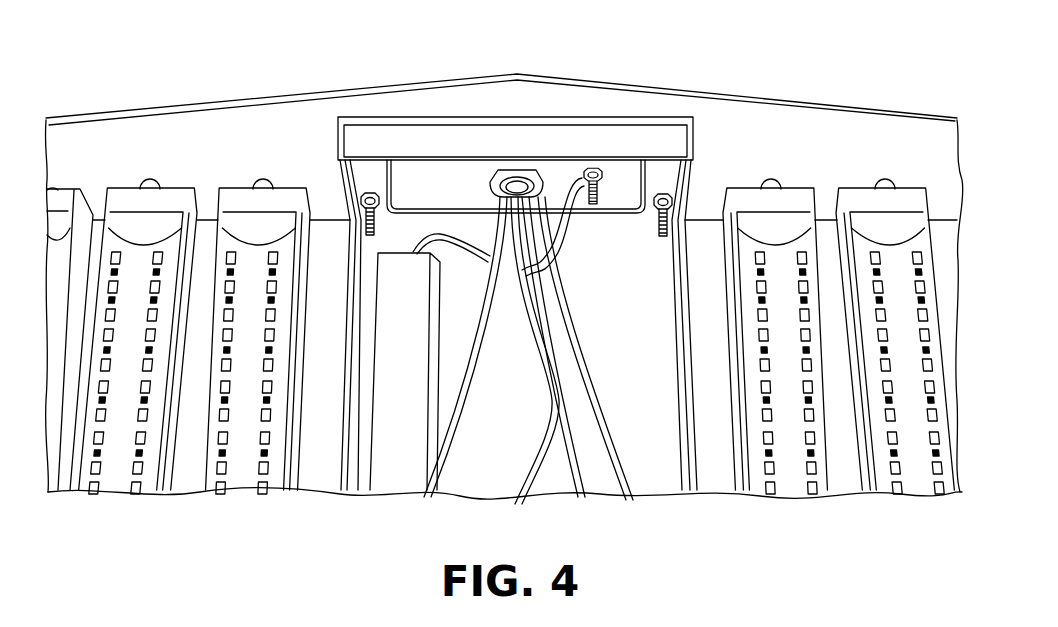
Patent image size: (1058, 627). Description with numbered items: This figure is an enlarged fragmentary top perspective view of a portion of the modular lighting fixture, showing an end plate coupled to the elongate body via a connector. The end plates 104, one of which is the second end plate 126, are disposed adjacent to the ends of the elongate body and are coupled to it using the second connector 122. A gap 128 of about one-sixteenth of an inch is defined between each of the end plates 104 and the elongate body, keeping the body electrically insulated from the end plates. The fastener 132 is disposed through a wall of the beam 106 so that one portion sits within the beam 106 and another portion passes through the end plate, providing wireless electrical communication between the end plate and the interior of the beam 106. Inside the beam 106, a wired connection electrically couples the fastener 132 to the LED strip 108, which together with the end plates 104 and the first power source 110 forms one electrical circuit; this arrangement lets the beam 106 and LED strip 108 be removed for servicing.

The end plates 104 is at (201, 143).
The beam 106 is at (855, 200).
The light emitting diode (LED) strip 108 is at (902, 227).
The first power source 110 is at (393, 463).
The second connector 122 is at (513, 168).
The second end plate 126 is at (313, 127).
The gap 128 is at (577, 117).
The fastener 132 is at (150, 180).